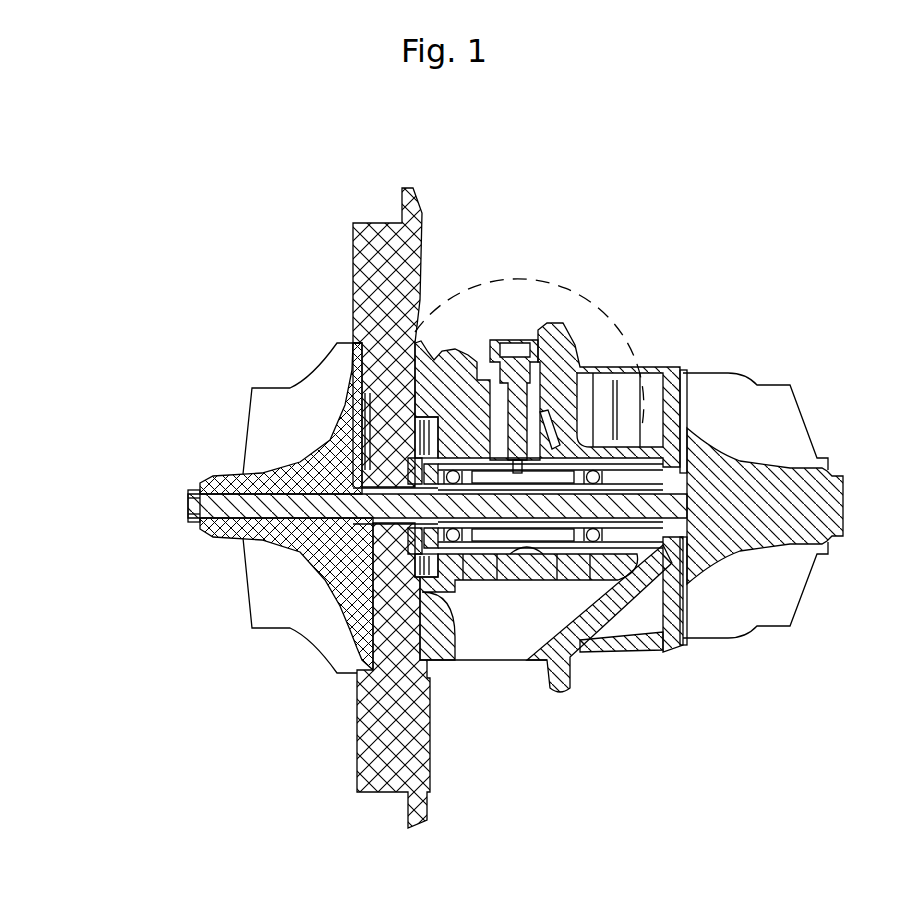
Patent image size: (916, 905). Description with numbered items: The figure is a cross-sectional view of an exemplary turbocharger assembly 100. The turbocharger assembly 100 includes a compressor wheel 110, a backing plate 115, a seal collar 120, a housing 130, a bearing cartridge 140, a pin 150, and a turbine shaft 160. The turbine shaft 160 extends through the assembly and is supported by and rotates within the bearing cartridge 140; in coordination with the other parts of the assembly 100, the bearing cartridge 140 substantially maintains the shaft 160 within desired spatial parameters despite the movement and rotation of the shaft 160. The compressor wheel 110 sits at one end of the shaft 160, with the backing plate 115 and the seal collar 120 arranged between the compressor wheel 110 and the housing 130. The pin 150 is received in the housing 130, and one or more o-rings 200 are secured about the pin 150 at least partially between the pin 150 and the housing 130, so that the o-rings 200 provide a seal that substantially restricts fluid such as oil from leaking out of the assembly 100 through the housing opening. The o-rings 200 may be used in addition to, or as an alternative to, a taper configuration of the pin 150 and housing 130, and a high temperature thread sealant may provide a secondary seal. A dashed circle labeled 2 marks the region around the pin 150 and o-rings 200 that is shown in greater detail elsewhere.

The turbocharger assembly 100 is at (180, 256).
The compressor wheel 110 is at (209, 475).
The backing plate 115 is at (356, 219).
The seal collar 120 is at (427, 532).
The housing 130 is at (450, 341).
The bearing cartridge 140 is at (579, 554).
The pin 150 is at (538, 328).
The turbine shaft 160 is at (845, 460).
The o-rings 200 is at (545, 370).
The detail region of Fig. 2 is at (529, 352).